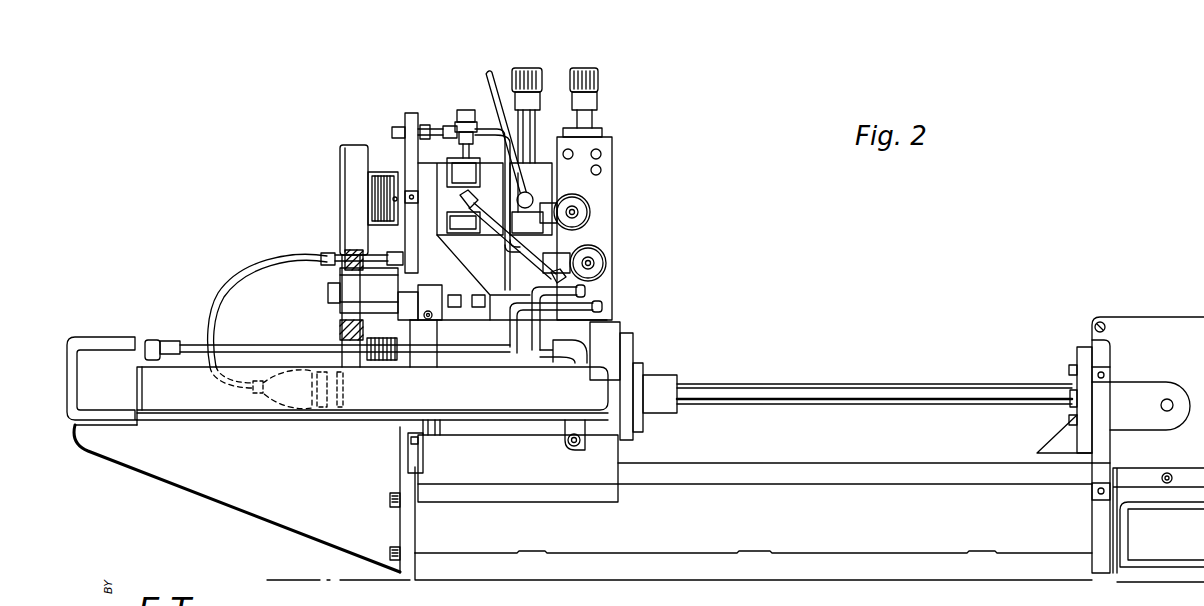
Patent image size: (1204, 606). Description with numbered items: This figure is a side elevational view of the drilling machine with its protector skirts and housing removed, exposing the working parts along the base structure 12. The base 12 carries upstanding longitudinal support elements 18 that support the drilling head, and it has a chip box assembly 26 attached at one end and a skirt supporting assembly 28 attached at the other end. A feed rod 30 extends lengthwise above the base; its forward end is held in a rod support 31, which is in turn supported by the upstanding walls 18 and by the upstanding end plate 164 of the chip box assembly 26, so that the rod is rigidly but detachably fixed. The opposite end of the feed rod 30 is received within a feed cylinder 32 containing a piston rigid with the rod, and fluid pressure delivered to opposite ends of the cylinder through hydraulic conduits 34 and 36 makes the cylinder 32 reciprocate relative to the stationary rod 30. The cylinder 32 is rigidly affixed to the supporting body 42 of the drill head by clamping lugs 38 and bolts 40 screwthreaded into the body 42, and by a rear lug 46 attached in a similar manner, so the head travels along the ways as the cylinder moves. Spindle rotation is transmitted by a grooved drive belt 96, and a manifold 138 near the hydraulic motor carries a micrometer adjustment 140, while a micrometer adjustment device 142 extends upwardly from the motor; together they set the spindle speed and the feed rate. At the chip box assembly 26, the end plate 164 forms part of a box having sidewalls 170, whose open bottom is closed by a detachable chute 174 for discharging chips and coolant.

The base structure 12 is at (1027, 567).
The upstanding longitudinal support elements 18 is at (932, 542).
The chip box assembly 26 is at (1168, 316).
The skirt supporting assembly 28 is at (203, 495).
The feed rods 30 is at (905, 395).
The rod supports 31 is at (1053, 445).
The feed cylinders 32 is at (492, 400).
The hydraulic conduit 34 is at (193, 350).
The hydraulic conduit 36 is at (540, 337).
The clamping lugs 38 is at (580, 430).
The bolts 40 is at (573, 446).
The supporting body 42 is at (472, 473).
The rear lug 46 is at (432, 423).
The drive belt 96 is at (338, 332).
The manifold 138 is at (600, 182).
The micrometer adjustment 140 is at (597, 99).
The micrometer adjustment device 142 is at (541, 82).
The end plate 164 is at (1100, 437).
The sidewalls 170 is at (1125, 333).
The chute 174 is at (1203, 567).